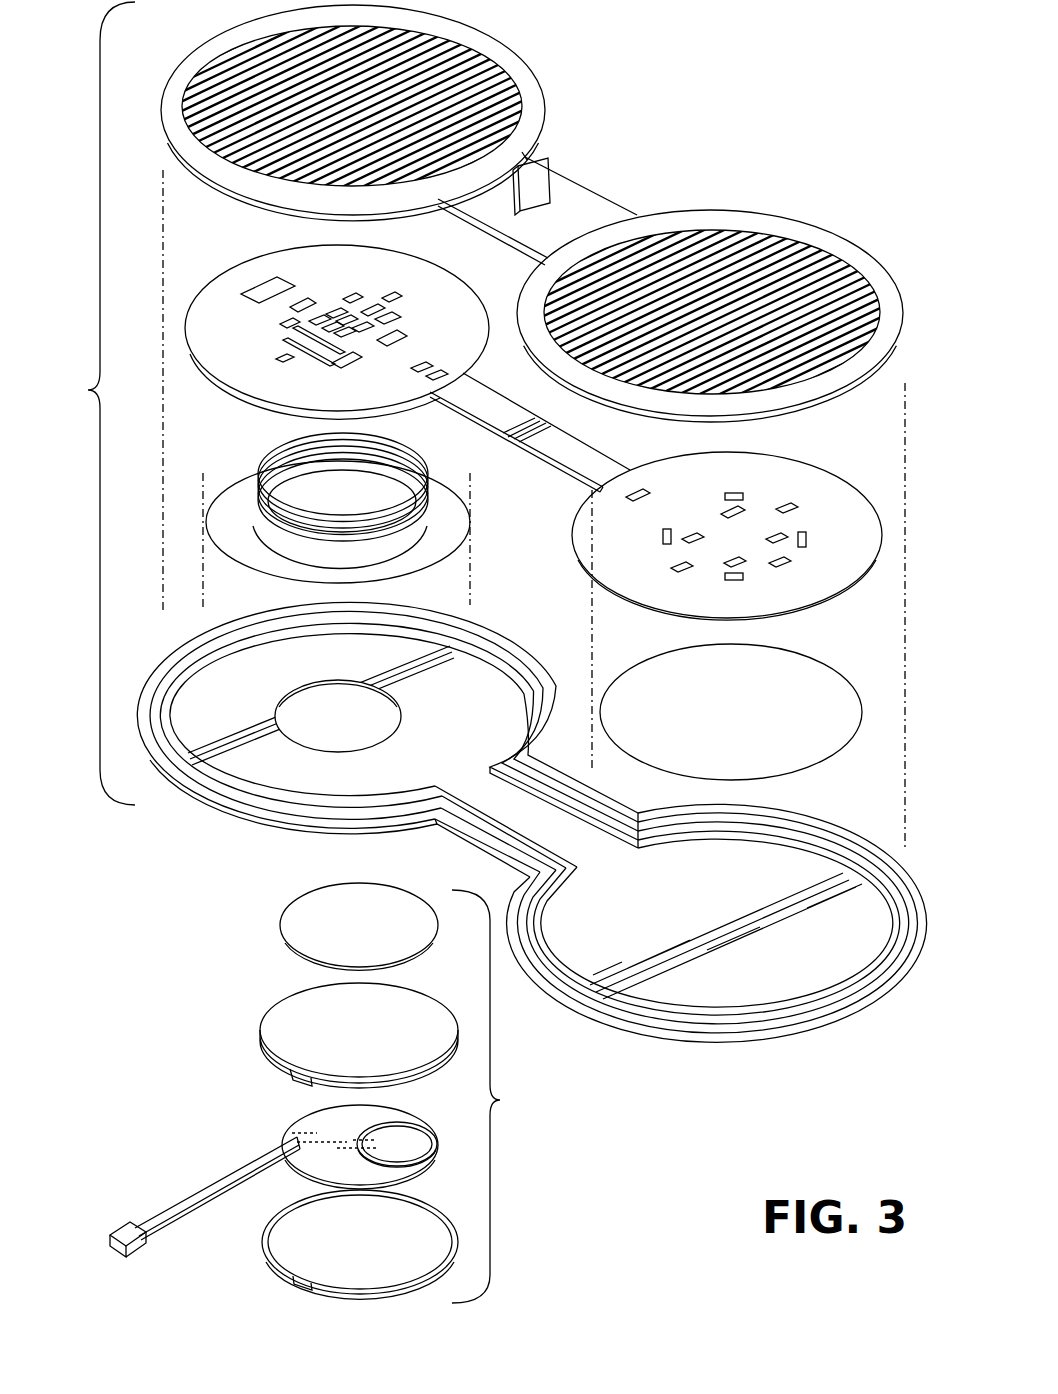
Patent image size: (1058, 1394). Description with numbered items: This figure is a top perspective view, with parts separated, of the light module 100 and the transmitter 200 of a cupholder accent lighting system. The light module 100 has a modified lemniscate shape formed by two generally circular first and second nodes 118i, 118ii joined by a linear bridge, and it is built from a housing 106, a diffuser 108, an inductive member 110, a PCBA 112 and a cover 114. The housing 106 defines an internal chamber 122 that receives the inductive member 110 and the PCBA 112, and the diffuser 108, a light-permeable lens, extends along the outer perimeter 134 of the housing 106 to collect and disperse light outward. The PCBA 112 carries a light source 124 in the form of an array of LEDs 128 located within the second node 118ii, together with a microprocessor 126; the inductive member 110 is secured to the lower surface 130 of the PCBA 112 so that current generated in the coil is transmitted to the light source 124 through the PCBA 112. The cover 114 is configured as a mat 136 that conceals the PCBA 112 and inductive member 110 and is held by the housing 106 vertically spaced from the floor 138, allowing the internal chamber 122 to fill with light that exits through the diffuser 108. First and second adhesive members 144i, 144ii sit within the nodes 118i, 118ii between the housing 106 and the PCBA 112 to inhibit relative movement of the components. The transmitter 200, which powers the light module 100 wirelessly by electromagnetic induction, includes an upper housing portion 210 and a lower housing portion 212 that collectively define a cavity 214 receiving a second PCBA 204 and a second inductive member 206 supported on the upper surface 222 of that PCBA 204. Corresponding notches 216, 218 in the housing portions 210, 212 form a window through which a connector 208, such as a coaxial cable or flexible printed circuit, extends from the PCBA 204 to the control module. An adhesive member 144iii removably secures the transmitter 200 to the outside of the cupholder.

The light module 100 is at (90, 403).
The housing 106 is at (531, 866).
The diffuser 108 is at (488, 830).
The inductive member 110 is at (272, 438).
The PCBA 112 is at (862, 470).
The cover 114 is at (602, 163).
The first node 118i is at (522, 40).
The second node 118ii is at (712, 312).
The internal chamber 122 is at (717, 956).
The light source 124 is at (727, 541).
The microprocessor 126 is at (237, 318).
The LEDs 128 is at (733, 490).
The lower surface 130 is at (400, 413).
The outer perimeter 134 is at (713, 1028).
The mat 136 is at (705, 265).
The floor 138 is at (558, 830).
The first adhesive member 144i is at (228, 537).
The second adhesive member 144ii is at (822, 700).
The adhesive member 144iii is at (352, 928).
The transmitter 200 is at (501, 1096).
The PCBA 204 is at (339, 1140).
The inductive member 206 is at (352, 1163).
The connector 208 is at (143, 1187).
The upper housing portion 210 is at (314, 1020).
The lower housing portion 212 is at (344, 1237).
The cavity 214 is at (378, 1235).
The notch 216 is at (297, 1070).
The notch 218 is at (297, 1270).
The upper surface 222 is at (345, 1125).